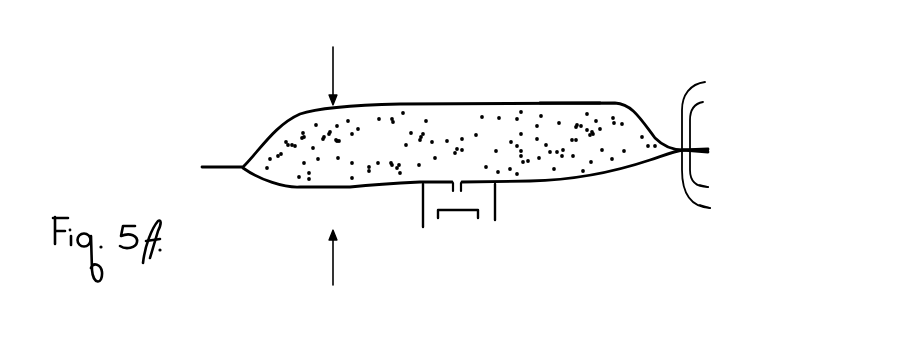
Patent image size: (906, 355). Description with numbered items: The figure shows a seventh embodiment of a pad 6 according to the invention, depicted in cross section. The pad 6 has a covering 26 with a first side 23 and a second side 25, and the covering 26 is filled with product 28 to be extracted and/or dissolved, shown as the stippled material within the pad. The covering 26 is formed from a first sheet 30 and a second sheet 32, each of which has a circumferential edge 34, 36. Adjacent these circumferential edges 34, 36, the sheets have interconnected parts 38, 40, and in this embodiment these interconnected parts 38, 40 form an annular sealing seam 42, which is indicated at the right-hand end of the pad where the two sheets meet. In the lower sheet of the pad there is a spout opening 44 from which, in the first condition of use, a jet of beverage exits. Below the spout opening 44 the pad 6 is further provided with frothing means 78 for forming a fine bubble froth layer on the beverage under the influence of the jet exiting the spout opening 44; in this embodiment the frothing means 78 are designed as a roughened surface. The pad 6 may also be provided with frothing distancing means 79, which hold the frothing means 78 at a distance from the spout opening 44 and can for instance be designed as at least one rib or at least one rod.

The pad 6 is at (735, 280).
The first side 23 is at (336, 63).
The second side 25 is at (334, 271).
The covering 26 is at (519, 100).
The product 28 is at (293, 133).
The first sheet 30 is at (567, 101).
The second sheet 32 is at (553, 184).
The circumferential edge 34 is at (706, 138).
The circumferential edge 36 is at (721, 210).
The interconnected part 38 is at (711, 138).
The interconnected part 40 is at (719, 187).
The annular sealing seam 42 is at (707, 152).
The spout opening 44 is at (448, 188).
The frothing means 78 is at (446, 215).
The frothing distancing means 79 is at (497, 193).